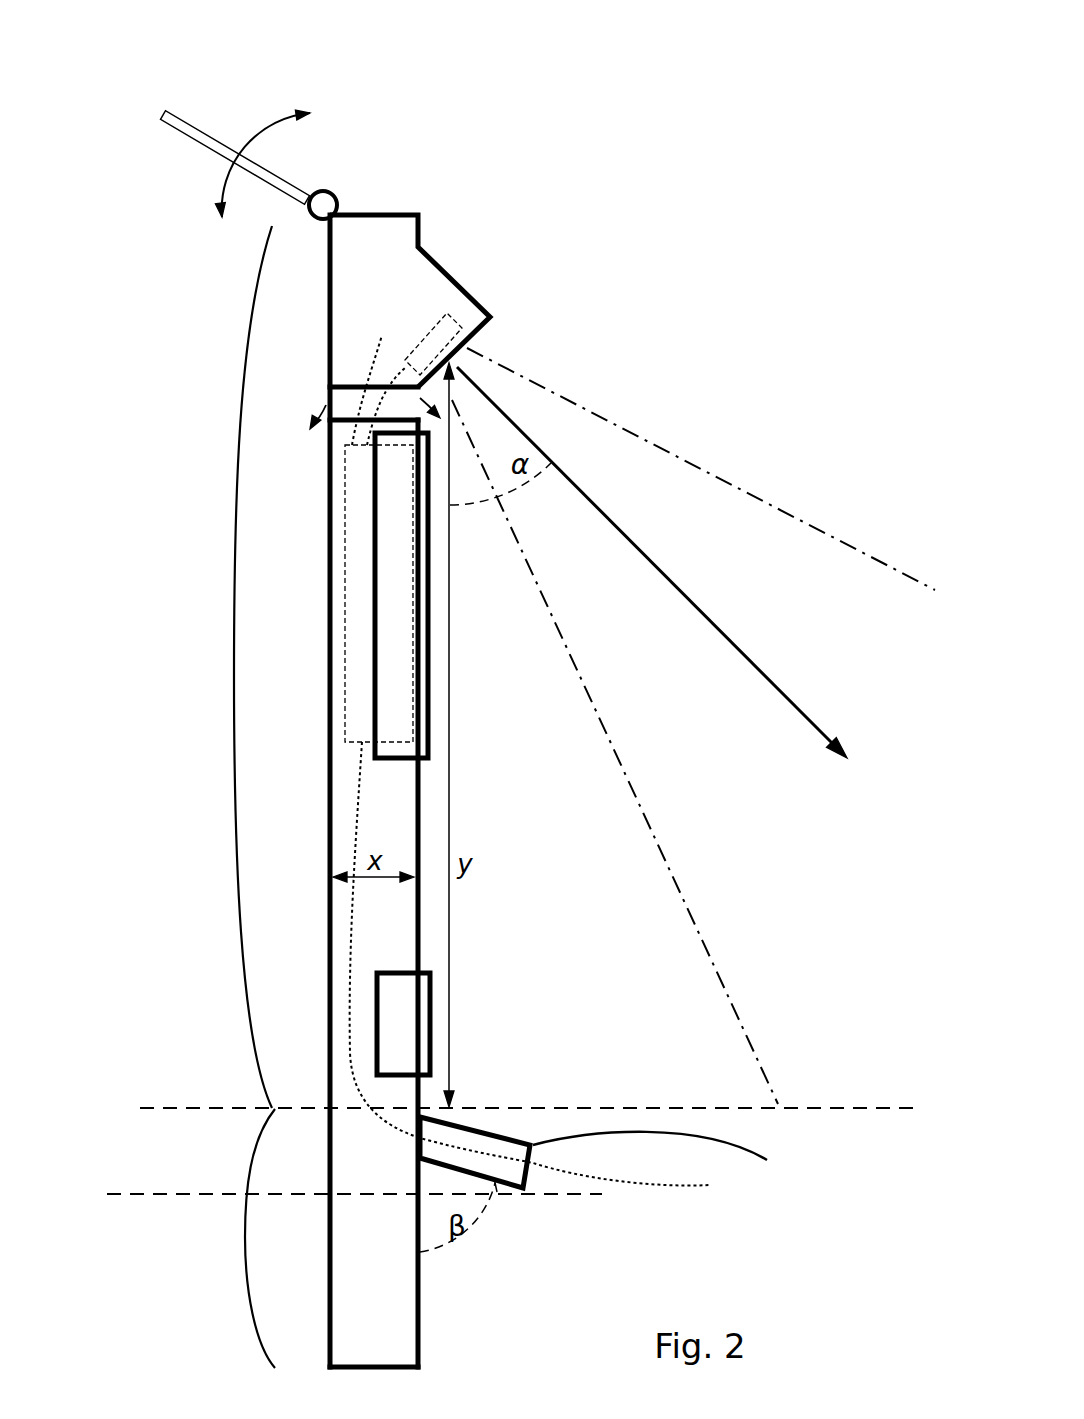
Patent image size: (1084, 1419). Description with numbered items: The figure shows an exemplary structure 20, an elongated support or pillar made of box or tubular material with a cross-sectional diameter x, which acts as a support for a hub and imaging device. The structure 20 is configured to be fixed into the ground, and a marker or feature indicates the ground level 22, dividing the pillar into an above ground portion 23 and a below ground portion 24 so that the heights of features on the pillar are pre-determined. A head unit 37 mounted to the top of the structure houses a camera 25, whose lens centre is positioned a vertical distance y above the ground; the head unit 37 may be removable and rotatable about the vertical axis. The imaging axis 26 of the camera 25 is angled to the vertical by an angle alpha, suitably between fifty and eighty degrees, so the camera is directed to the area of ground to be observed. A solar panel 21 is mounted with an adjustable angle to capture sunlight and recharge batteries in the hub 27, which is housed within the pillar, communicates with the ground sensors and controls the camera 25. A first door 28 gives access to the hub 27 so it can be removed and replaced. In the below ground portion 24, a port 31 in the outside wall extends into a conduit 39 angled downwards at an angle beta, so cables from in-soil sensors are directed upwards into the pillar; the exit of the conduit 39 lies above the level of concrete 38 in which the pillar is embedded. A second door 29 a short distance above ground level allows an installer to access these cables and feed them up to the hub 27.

The structure 20 is at (132, 223).
The solar panel 21 is at (217, 137).
The ground level 22 is at (668, 1108).
The above ground portion 23 is at (234, 663).
The below ground portion 24 is at (245, 1237).
The camera 25 is at (437, 350).
The imaging axis 26 is at (762, 670).
The hub 27 is at (353, 577).
The first door 28 is at (428, 610).
The second door 29 is at (430, 1032).
The port 31 is at (400, 1135).
The head unit 37 is at (417, 275).
The level of concrete 38 is at (142, 1193).
The conduit 39 is at (669, 1158).